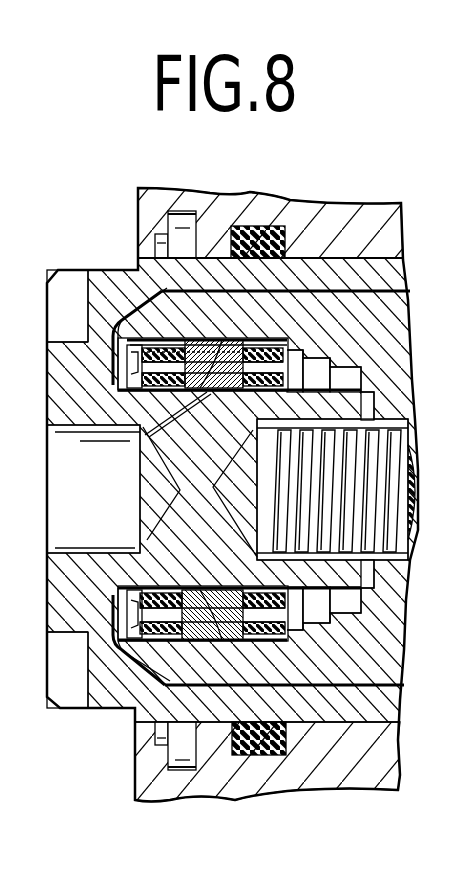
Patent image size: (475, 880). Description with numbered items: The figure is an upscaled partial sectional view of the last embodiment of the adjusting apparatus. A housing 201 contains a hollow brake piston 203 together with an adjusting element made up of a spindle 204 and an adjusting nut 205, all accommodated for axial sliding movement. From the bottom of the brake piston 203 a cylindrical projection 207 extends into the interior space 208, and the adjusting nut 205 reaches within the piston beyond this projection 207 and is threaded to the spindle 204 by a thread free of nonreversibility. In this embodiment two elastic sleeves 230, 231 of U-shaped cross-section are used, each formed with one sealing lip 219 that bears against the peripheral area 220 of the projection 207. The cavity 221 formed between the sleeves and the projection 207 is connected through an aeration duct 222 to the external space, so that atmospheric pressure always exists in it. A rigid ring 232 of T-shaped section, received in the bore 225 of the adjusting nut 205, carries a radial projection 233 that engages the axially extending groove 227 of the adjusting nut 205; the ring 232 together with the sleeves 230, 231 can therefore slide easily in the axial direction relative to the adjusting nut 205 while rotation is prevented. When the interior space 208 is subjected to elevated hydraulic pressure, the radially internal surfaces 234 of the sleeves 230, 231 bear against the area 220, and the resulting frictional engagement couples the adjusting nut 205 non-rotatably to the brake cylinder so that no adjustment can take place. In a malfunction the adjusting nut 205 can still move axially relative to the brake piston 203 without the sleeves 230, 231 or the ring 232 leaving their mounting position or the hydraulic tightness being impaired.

The housing 201 is at (373, 223).
The brake piston 203 is at (390, 273).
The spindle 204 is at (392, 515).
The adjusting nut 205 is at (388, 325).
The cylindrical projection 207 is at (332, 570).
The interior space 208 is at (325, 600).
The sealing lip 219 is at (105, 378).
The peripheral area 220 is at (160, 400).
The cavity 221 is at (374, 410).
The aeration duct 222 is at (140, 448).
The bore 225 is at (97, 340).
The groove 227 is at (150, 363).
The elastic sleeve 230 is at (137, 363).
The elastic sleeve 231 is at (288, 370).
The rigid ring 232 is at (236, 340).
The radial projection 233 is at (212, 335).
The radially internal surface 234 is at (203, 397).